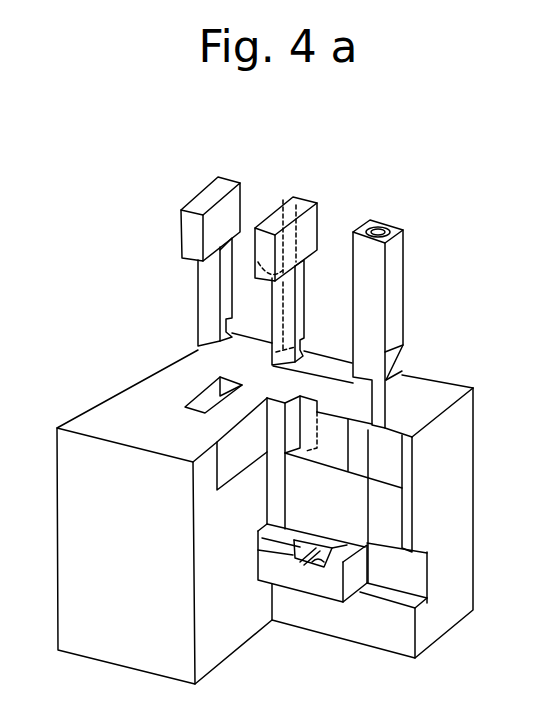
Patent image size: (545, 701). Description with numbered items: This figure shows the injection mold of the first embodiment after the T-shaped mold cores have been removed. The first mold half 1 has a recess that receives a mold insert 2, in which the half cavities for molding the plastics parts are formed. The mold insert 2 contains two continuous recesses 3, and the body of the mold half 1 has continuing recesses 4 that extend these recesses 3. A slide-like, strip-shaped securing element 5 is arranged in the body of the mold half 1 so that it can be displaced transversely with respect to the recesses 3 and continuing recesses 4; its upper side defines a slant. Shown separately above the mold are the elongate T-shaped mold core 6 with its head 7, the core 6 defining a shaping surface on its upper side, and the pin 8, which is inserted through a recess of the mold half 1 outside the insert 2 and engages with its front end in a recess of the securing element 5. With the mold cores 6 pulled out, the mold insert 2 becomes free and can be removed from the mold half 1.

The first mold half 1 is at (455, 446).
The mold insert 2 is at (175, 388).
The continuous recesses 3 is at (213, 392).
The continuing recesses 4 is at (297, 491).
The slide-like strip-shaped securing element 5 is at (357, 562).
The T-shaped mold core 6 is at (193, 226).
The head 7 is at (187, 205).
The pin 8 is at (370, 283).